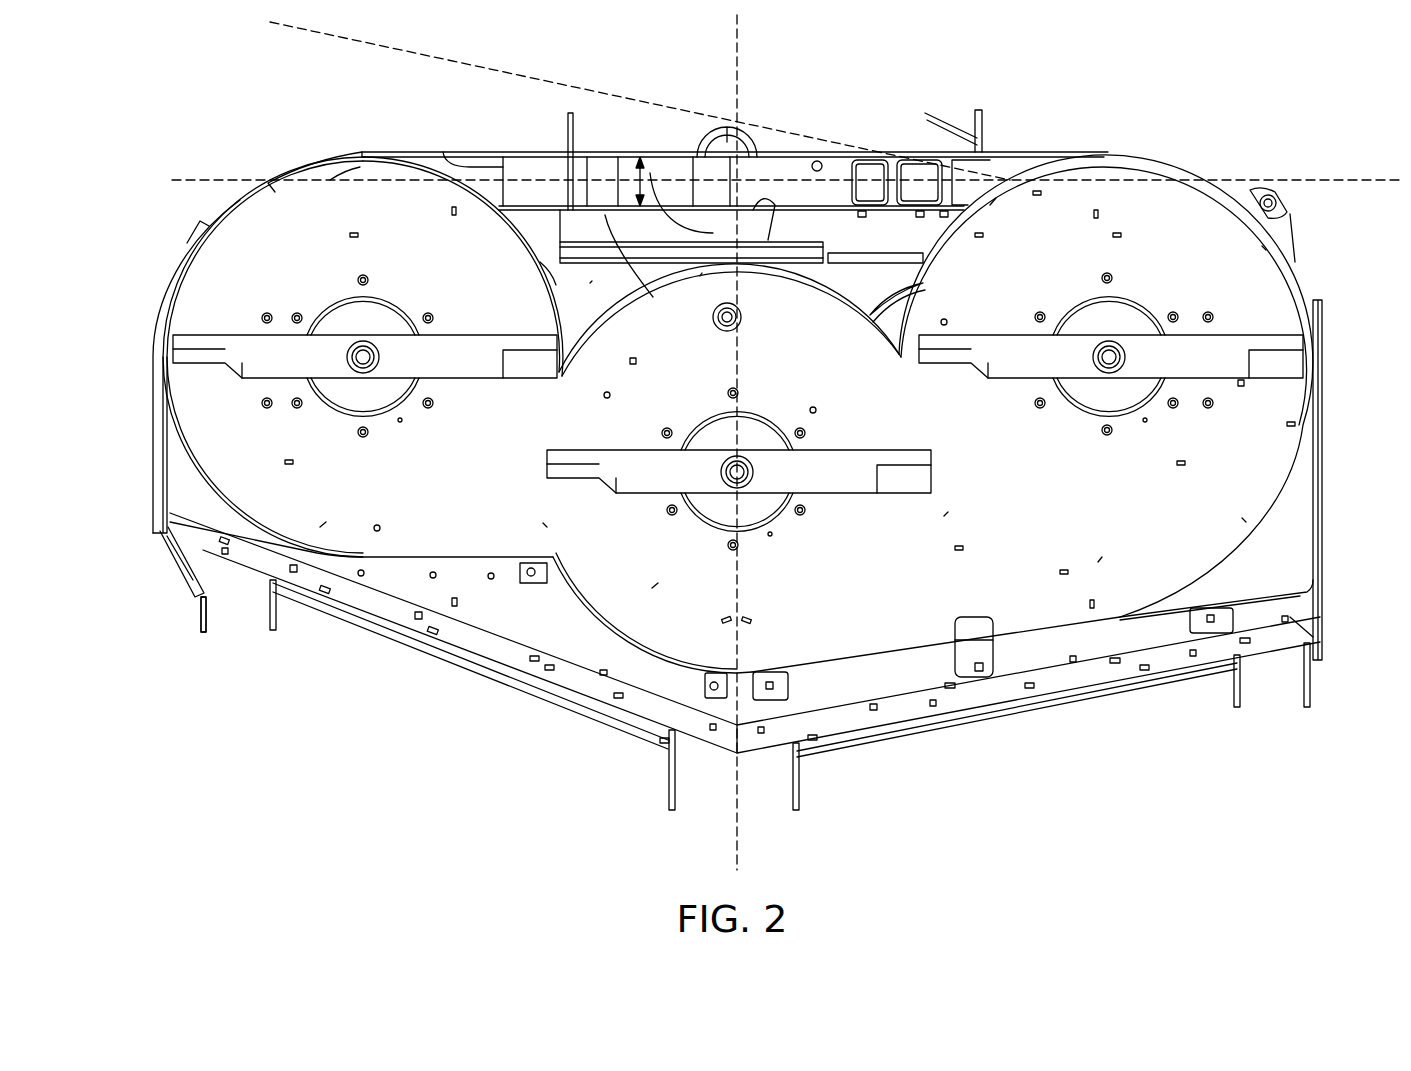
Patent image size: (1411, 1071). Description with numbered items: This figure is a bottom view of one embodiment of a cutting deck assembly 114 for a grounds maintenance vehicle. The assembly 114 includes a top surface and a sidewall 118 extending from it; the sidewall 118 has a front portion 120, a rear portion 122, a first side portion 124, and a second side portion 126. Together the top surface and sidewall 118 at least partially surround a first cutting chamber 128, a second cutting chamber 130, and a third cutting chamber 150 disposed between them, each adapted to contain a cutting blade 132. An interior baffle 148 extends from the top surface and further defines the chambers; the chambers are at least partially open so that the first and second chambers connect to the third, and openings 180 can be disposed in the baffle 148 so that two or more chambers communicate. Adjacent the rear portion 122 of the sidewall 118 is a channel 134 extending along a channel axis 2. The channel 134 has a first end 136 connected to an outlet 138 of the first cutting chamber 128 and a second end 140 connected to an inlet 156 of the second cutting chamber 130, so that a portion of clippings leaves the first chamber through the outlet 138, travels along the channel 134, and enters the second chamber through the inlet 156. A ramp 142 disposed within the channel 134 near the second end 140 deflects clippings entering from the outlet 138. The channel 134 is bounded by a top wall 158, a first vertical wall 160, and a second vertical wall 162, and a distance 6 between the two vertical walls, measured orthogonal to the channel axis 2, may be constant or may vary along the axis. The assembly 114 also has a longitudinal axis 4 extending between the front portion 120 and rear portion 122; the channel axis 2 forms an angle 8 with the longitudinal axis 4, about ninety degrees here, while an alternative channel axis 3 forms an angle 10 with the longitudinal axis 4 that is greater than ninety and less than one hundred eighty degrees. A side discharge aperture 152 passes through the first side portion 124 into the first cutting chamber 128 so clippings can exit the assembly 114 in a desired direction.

The channel axis 2 is at (200, 178).
The channel axis 3 is at (318, 33).
The longitudinal axis 4 is at (735, 830).
The distance 6 is at (650, 184).
The angle 8 is at (699, 277).
The angle 10 is at (590, 283).
The cutting deck assembly 114 is at (1268, 90).
The sidewall 118 is at (138, 492).
The front portion 120 is at (876, 745).
The rear portion 122 is at (605, 215).
The first side portion 124 is at (1293, 263).
The second side portion 126 is at (170, 273).
The first cutting chamber 128 is at (1100, 560).
The second cutting chamber 130 is at (322, 527).
The cutting blade 132 is at (452, 360).
The channel 134 is at (783, 128).
The first end 136 is at (1021, 147).
The outlet 138 is at (997, 201).
The second end 140 is at (490, 167).
The ramp 142 is at (545, 165).
The interior baffle 148 is at (545, 262).
The third cutting chamber 150 is at (655, 586).
The side discharge aperture 152 is at (1262, 249).
The inlet 156 is at (448, 186).
The top wall 158 is at (721, 238).
The first vertical wall 160 is at (756, 278).
The second vertical wall 162 is at (822, 160).
The openings 180 is at (544, 524).